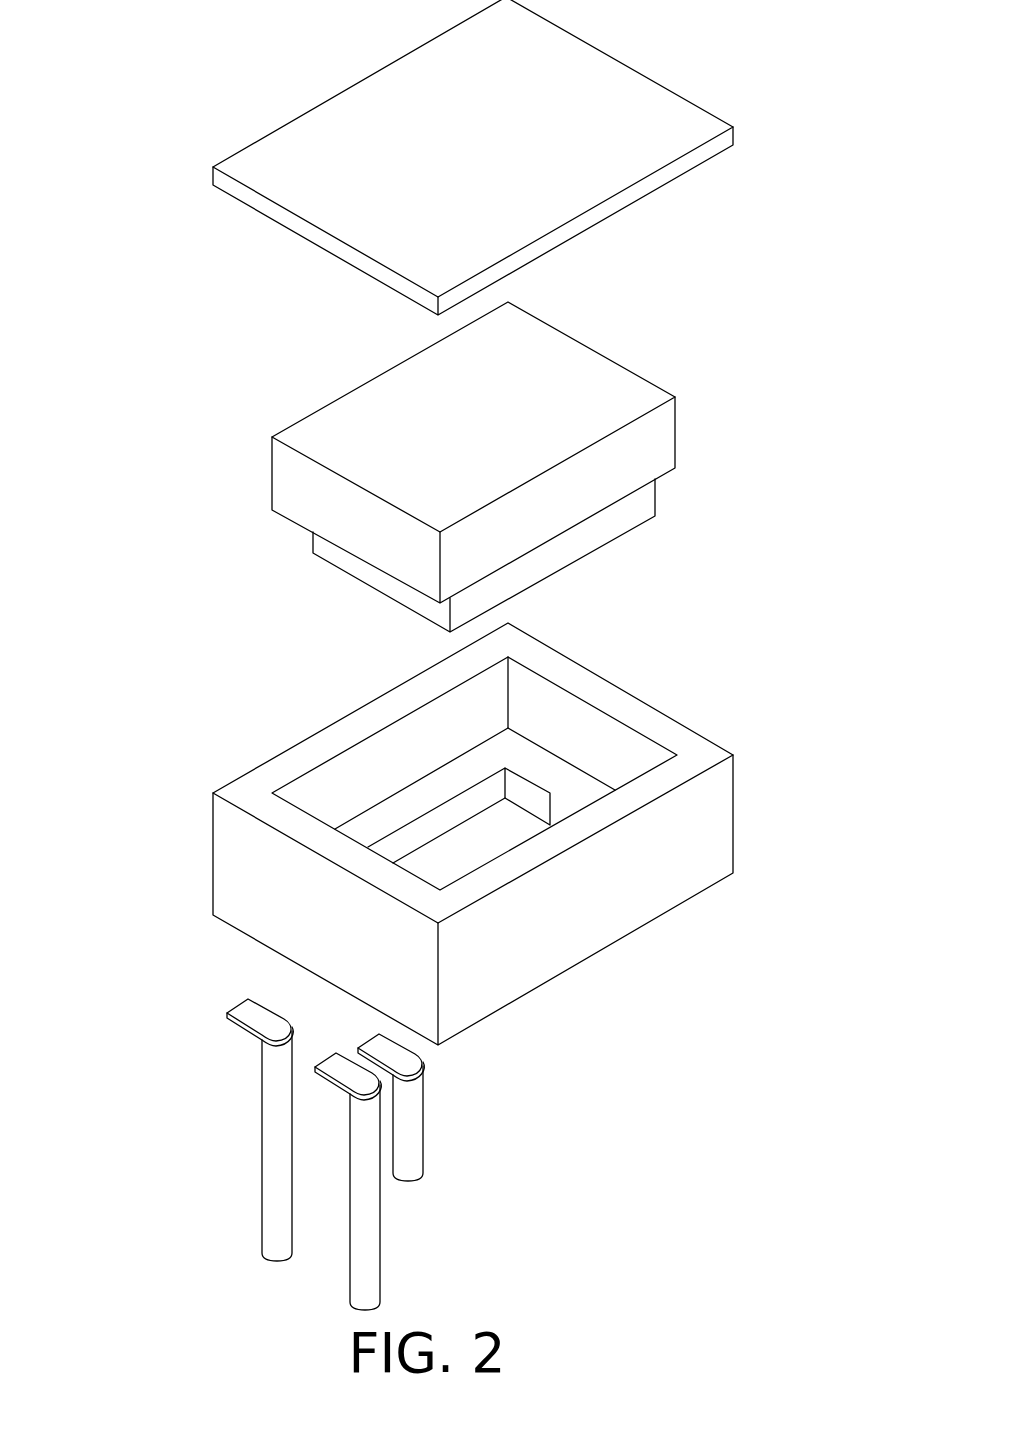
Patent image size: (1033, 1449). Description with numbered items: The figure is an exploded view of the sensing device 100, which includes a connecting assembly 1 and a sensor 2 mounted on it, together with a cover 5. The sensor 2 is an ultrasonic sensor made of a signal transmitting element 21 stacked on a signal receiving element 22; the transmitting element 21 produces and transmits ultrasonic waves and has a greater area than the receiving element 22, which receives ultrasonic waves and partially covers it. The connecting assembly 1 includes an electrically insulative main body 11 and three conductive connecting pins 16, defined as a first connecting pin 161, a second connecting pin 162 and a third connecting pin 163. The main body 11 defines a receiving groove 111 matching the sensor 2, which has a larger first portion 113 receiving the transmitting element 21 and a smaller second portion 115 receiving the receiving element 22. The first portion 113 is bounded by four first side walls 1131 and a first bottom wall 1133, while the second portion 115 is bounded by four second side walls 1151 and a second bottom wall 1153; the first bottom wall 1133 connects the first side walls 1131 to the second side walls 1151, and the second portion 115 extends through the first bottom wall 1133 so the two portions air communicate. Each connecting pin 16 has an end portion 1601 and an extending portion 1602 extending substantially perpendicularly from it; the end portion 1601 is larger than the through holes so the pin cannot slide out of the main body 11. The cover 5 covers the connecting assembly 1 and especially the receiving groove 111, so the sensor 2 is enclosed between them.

The sensing device 100 is at (198, 43).
The cover 5 is at (657, 103).
The sensor 2 is at (539, 467).
The signal transmitting element 21 is at (657, 437).
The signal receiving element 22 is at (643, 502).
The connecting assembly 1 is at (452, 938).
The main body 11 is at (435, 807).
The receiving groove 111 is at (653, 567).
The first portion 113 is at (384, 812).
The first side wall 1131 is at (440, 722).
The first bottom wall 1133 is at (413, 793).
The second portion 115 is at (384, 741).
The second side wall 1151 is at (553, 817).
The second bottom wall 1153 is at (480, 847).
The connecting pin 16 is at (452, 1141).
The first connecting pin 161 is at (424, 1118).
The second connecting pin 162 is at (428, 1128).
The third connecting pin 163 is at (382, 1222).
The end portion 1601 is at (377, 1047).
The extending portion 1602 is at (397, 1113).